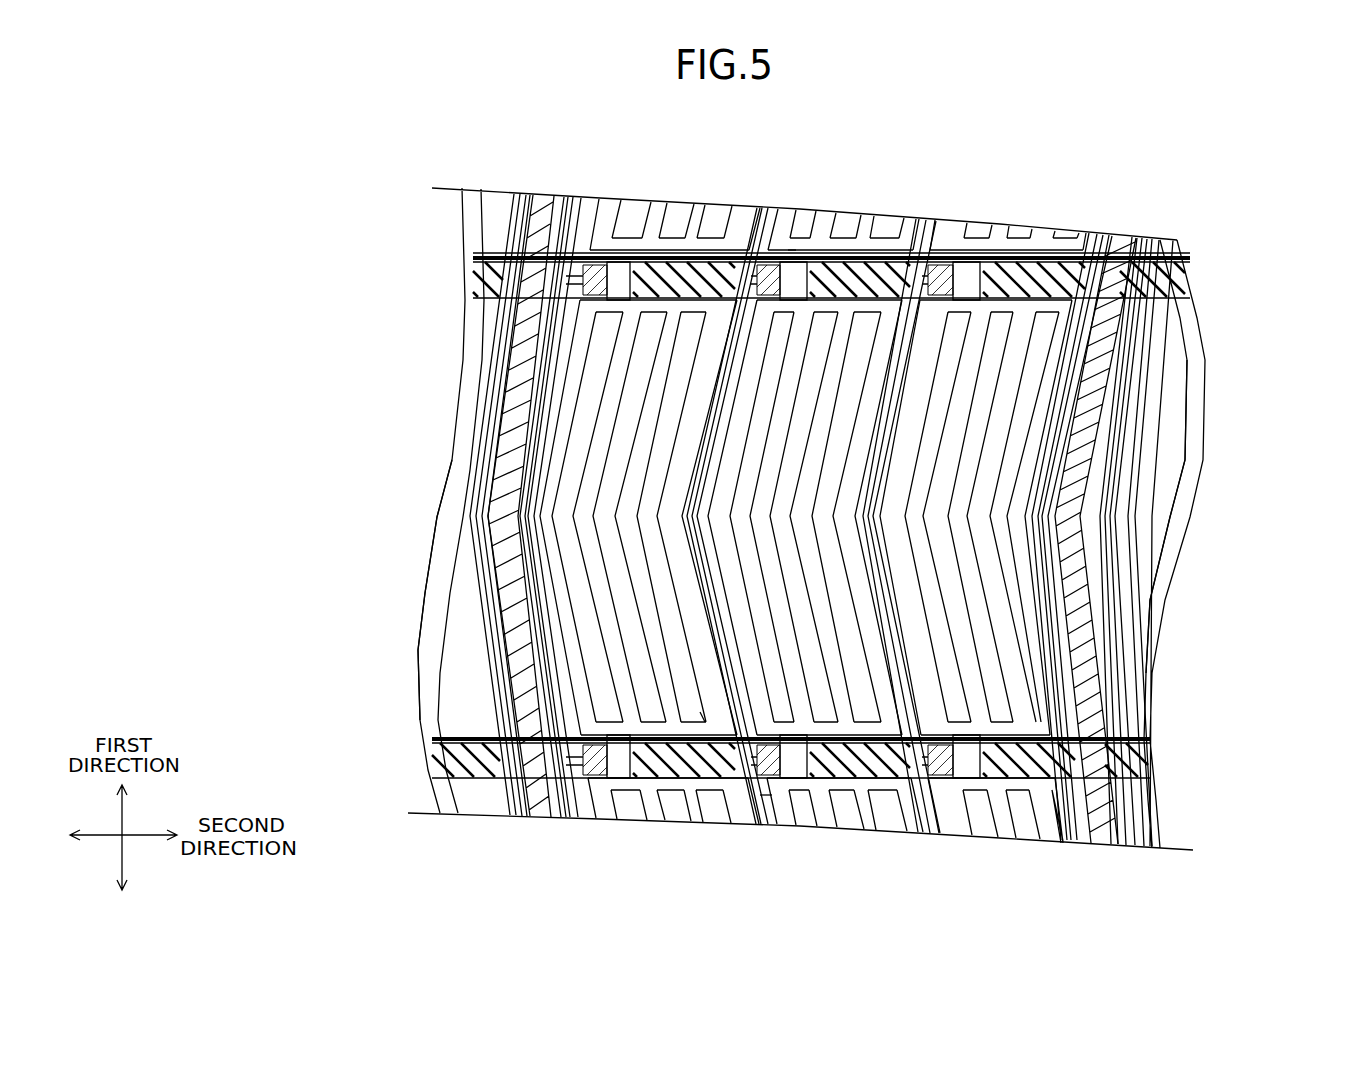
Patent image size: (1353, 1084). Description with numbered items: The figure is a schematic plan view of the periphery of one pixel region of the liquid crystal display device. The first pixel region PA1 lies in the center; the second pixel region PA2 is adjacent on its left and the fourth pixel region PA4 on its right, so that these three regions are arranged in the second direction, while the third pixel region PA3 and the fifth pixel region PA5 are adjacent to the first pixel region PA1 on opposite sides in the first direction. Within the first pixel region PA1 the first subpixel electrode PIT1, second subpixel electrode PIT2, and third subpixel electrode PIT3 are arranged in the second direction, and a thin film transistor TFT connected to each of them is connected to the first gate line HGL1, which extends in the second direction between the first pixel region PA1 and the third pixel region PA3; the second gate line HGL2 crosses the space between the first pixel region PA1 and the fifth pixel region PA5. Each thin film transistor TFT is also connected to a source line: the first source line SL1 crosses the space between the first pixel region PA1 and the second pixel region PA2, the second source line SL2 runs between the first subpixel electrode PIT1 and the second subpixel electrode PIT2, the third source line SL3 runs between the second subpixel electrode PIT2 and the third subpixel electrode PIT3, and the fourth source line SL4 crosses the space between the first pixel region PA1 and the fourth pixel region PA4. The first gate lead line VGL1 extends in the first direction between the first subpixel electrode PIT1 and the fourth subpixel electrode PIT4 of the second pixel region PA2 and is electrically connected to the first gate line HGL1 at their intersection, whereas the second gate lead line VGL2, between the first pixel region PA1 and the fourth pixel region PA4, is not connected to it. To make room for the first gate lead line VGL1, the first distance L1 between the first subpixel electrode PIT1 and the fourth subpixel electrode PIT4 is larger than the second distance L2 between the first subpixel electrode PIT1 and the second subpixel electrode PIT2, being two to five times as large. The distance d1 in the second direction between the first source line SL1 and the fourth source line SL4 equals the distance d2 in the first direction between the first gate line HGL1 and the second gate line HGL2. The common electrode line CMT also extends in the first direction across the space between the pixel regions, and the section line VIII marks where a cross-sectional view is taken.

The common electrode line CMT is at (512, 250).
The first gate lead line VGL1 is at (538, 250).
The second gate lead line VGL2 is at (1120, 250).
The first source line SL1 is at (566, 232).
The second source line SL2 is at (748, 250).
The third source line SL3 is at (920, 250).
The fourth source line SL4 is at (1158, 250).
The first gate line HGL1 is at (480, 287).
The second gate line HGL2 is at (450, 761).
The thin film transistor TFT is at (607, 258).
The first subpixel electrode PIT1 is at (632, 717).
The second subpixel electrode PIT2 is at (847, 713).
The third subpixel electrode PIT3 is at (1018, 713).
The fourth subpixel electrode PIT4 is at (490, 727).
The first pixel region PA1 is at (710, 723).
The second pixel region PA2 is at (452, 668).
The third pixel region PA3 is at (792, 250).
The fourth pixel region PA4 is at (1152, 546).
The fifth pixel region PA5 is at (766, 802).
The first distance L1 is at (570, 412).
The second distance L2 is at (667, 408).
The distance in the second direction d1 is at (1122, 339).
The distance in the first direction d2 is at (1045, 312).
The section line VIII- VIII is at (588, 549).